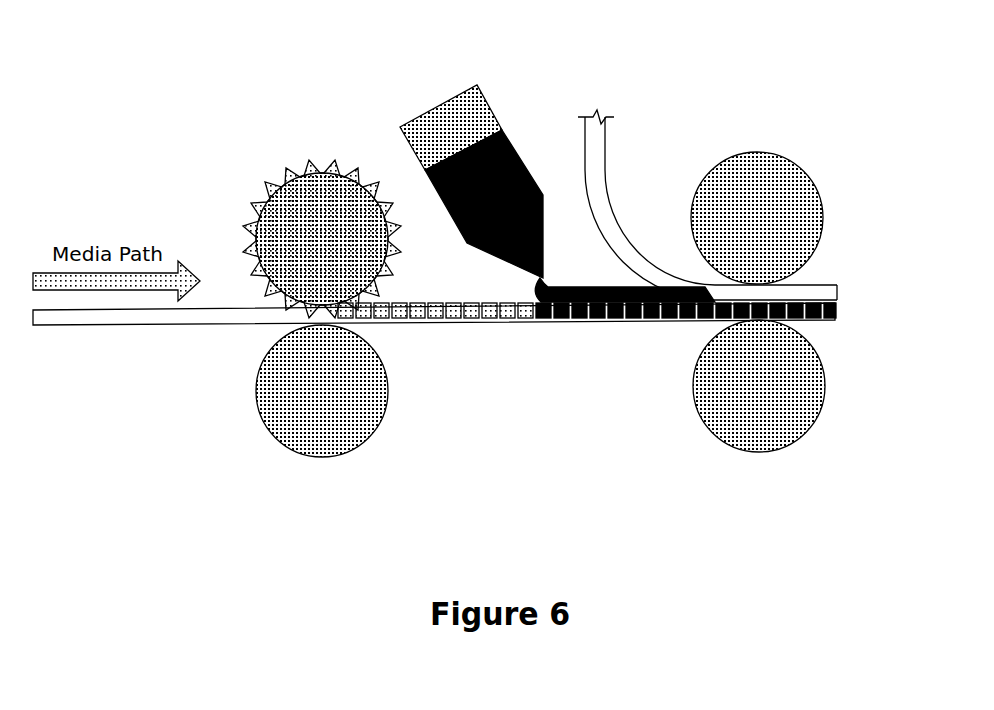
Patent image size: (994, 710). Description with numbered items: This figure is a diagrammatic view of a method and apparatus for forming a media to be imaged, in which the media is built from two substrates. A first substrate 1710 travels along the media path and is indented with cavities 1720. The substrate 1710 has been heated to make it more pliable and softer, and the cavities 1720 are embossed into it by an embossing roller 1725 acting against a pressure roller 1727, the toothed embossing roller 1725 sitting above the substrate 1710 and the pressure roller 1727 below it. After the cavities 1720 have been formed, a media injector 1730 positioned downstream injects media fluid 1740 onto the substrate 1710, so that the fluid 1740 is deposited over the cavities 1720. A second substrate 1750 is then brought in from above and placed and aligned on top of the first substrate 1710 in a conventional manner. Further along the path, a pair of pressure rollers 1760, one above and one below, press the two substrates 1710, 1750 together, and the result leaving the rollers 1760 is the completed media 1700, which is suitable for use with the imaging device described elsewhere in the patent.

The completed media 1700 is at (835, 318).
The first substrate 1710 is at (145, 327).
The cavities 1720 is at (426, 321).
The embossing roller 1725 is at (243, 223).
The pressure roller 1727 is at (254, 392).
The media injector 1730 is at (454, 94).
The media fluid 1740 is at (515, 148).
The second substrate 1750 is at (608, 183).
The pressure rollers 1760 is at (828, 378).